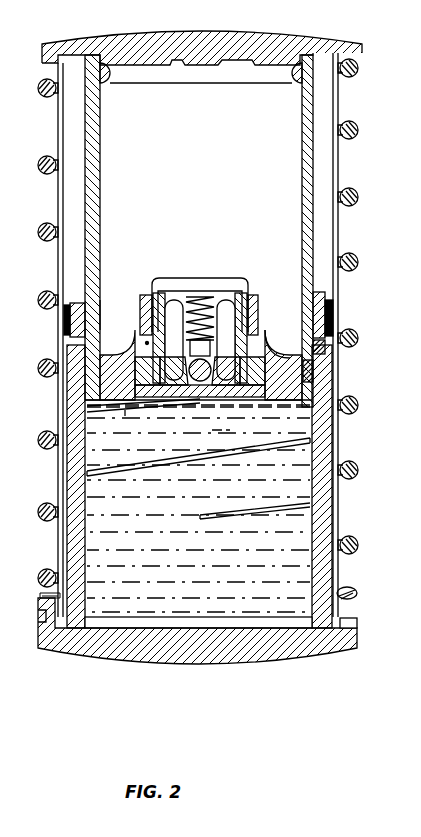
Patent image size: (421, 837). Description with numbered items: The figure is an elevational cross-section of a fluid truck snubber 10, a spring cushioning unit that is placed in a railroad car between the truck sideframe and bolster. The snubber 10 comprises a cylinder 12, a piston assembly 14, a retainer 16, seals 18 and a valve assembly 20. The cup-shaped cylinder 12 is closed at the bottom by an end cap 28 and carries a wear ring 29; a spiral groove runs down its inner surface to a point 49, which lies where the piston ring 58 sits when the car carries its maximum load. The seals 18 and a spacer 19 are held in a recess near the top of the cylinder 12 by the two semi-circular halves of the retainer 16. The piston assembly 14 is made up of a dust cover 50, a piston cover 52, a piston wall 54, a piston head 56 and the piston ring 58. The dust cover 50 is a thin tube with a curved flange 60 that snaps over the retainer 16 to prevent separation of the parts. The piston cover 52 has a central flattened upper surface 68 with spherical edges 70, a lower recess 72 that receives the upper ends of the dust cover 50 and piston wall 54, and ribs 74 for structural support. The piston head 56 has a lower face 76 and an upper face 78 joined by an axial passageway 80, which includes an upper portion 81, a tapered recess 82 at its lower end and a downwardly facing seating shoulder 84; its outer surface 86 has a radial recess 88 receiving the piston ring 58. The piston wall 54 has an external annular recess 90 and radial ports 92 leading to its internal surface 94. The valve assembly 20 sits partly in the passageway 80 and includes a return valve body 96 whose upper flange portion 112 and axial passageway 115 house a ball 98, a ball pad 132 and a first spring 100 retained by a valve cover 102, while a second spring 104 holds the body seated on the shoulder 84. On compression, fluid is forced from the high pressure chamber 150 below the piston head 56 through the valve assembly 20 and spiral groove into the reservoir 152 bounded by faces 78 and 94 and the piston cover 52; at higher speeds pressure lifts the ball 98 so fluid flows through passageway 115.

The fluid truck snubber 10 is at (352, 291).
The cylinder 12 is at (340, 450).
The piston assembly 14 is at (350, 140).
The retainer 16 is at (340, 297).
The seals 18 is at (330, 318).
The spacer 19 is at (70, 322).
The valve assembly 20 is at (320, 268).
The end cap 28 is at (323, 650).
The wear ring 29 is at (358, 594).
The point 49 is at (200, 516).
The dust cover 50 is at (338, 210).
The piston cover 52 is at (255, 45).
The piston wall 54 is at (308, 163).
The piston head 56 is at (332, 404).
The piston ring 58 is at (325, 380).
The curved flange 60 is at (324, 348).
The central flattened upper surface 68 is at (215, 45).
The spherical edges 70 is at (293, 45).
The recess 72 is at (338, 74).
The ribs 74 is at (288, 72).
The lower face 76 is at (300, 444).
The upper face 78 is at (276, 367).
The axial passageway 80 is at (284, 396).
The upper portion 81 is at (152, 408).
The tapered recess 82 is at (86, 420).
The seating shoulder 84 is at (252, 396).
The outer surface 86 is at (72, 382).
The radial recess 88 is at (318, 372).
The external annular recess 90 is at (300, 335).
The radial ports 92 is at (146, 341).
The internal surface 94 is at (307, 164).
The return valve body 96 is at (128, 428).
The ball 98 is at (210, 394).
The first spring 100 is at (205, 296).
The valve cover 102 is at (190, 300).
The second spring 104 is at (142, 318).
The upper flange portion 112 is at (240, 282).
The axial passageway 115 is at (165, 298).
The ball pad 132 is at (252, 432).
The high pressure chamber 150 is at (207, 573).
The reservoir 152 is at (205, 197).